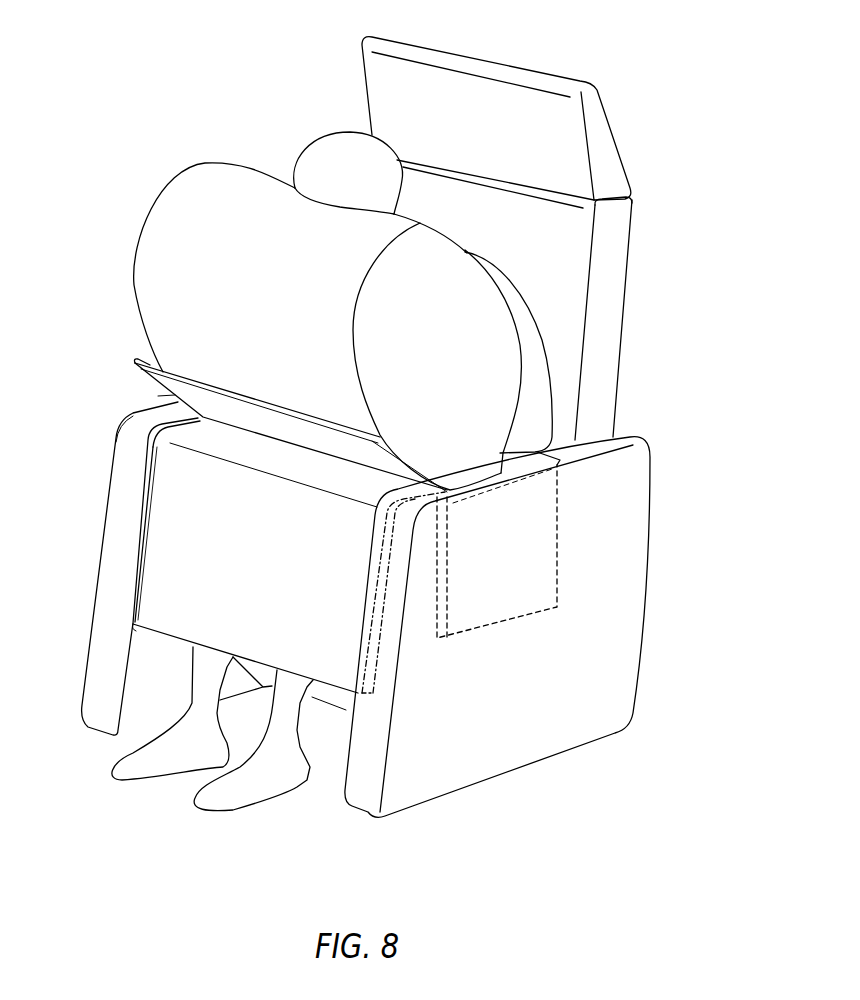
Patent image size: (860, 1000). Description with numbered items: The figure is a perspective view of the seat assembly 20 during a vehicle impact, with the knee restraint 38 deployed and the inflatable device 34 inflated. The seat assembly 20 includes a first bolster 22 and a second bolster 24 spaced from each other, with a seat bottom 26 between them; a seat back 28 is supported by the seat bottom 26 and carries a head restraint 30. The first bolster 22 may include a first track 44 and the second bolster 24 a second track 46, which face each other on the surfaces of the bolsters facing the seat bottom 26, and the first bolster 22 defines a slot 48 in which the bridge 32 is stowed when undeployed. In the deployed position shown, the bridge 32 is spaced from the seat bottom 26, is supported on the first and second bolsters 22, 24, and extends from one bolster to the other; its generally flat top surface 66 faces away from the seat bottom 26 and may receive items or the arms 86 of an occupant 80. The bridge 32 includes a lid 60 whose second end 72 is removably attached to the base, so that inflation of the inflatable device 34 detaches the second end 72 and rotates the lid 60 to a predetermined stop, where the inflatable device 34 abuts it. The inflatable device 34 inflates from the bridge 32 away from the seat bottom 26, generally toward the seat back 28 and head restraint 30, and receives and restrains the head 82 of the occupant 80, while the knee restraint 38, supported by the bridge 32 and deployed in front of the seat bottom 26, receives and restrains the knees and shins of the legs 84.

The seat assembly 20 is at (135, 87).
The first bolster 22 is at (623, 532).
The second bolster 24 is at (97, 683).
The seat bottom 26 is at (342, 700).
The seat back 28 is at (613, 235).
The head restraint 30 is at (366, 86).
The bridge 32 is at (170, 385).
The inflatable device 34 is at (167, 217).
The knee restraint 38 is at (160, 557).
The first track 44 is at (370, 697).
The second track 46 is at (132, 623).
The slot 48 is at (483, 630).
The lid 60 is at (158, 396).
The top surface 66 is at (116, 437).
The second end 72 is at (144, 360).
The occupant 80 is at (250, 87).
The head 82 is at (344, 152).
The legs 84 is at (198, 705).
The arms 86 is at (533, 407).